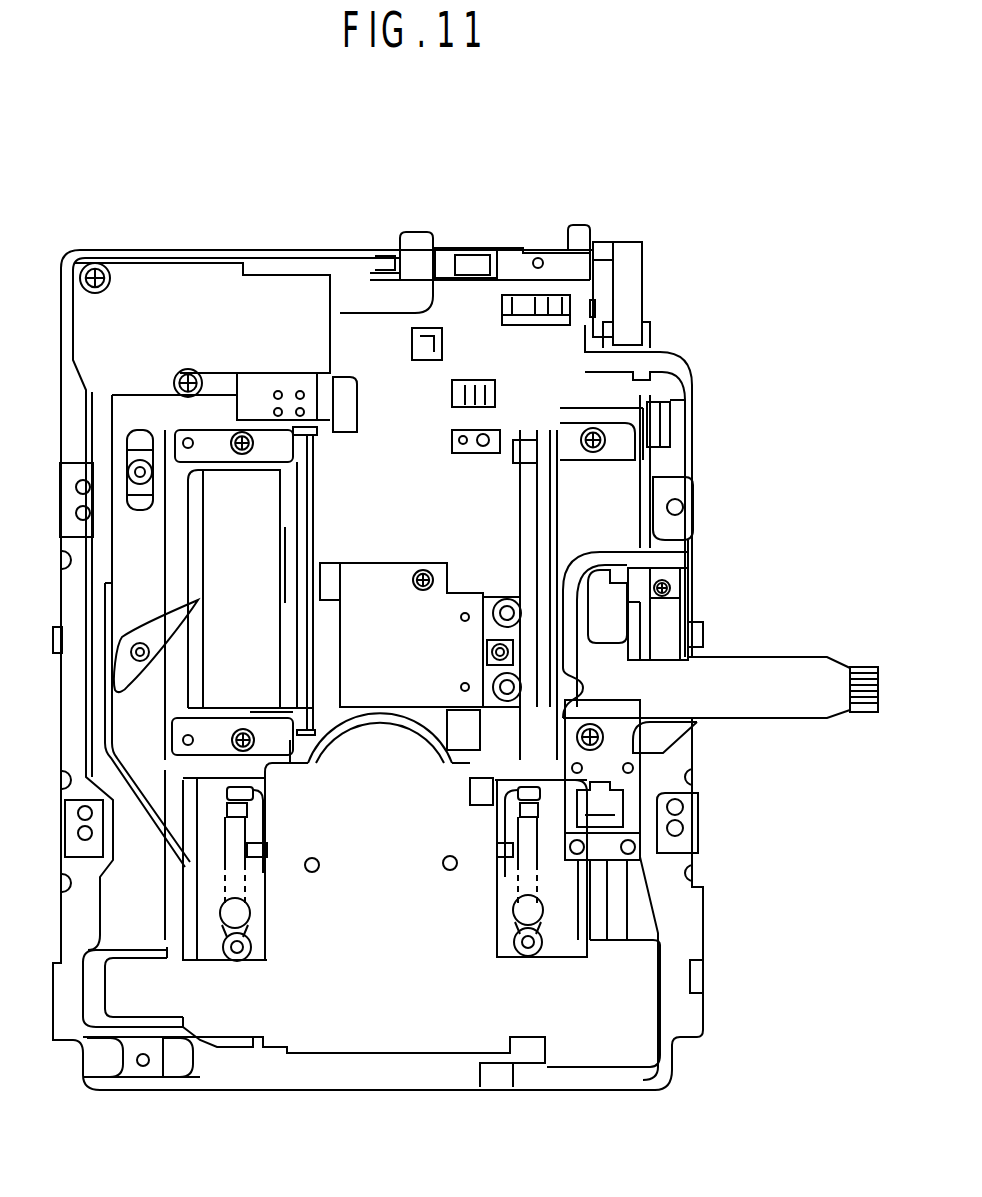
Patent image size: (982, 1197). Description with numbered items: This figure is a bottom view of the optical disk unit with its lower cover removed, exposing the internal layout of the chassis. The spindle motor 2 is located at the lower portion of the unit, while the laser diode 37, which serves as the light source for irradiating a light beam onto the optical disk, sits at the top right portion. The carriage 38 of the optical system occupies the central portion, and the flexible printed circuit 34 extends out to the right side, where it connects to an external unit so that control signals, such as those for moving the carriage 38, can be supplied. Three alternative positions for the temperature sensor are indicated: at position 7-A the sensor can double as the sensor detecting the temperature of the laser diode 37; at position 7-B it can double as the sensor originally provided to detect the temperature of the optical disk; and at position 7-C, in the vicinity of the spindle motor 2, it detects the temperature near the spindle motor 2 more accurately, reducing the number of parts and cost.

The spindle motor 2 is at (641, 1043).
The temperature sensor position 7-A is at (600, 268).
The laser diode 37 is at (632, 263).
The temperature sensor position 7-B is at (328, 565).
The carriage 38 is at (417, 637).
The flexible printed circuit 34 is at (740, 667).
The temperature sensor position 7-C is at (470, 783).